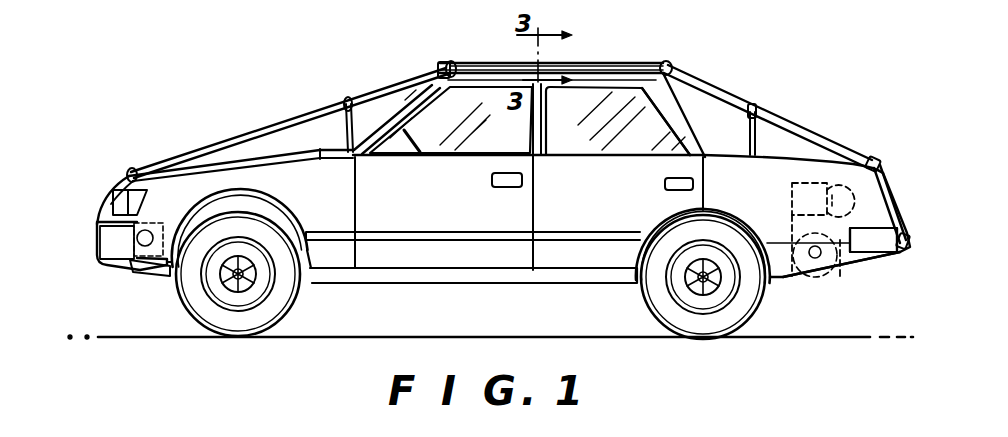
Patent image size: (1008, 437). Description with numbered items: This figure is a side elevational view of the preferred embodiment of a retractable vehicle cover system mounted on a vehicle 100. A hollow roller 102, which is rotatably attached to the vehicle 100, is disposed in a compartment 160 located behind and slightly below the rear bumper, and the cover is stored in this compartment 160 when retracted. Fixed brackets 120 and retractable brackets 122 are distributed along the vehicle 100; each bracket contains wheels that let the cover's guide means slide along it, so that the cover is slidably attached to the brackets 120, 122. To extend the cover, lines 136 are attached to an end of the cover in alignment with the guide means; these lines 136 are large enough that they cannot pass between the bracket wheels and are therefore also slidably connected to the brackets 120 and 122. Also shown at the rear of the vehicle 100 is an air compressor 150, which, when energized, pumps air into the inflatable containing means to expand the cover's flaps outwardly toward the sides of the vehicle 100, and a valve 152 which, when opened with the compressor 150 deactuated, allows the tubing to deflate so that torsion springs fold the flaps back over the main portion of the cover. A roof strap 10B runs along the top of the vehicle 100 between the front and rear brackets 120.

The vehicle 100 is at (477, 258).
The roller 102 is at (822, 283).
The roof strap 10B is at (604, 70).
The fixed brackets 120 is at (131, 173).
The retractable brackets 122 is at (348, 98).
The lines 136 is at (252, 134).
The air compressor 150 is at (790, 197).
The valve 152 is at (437, 62).
The compartment 160 is at (778, 281).